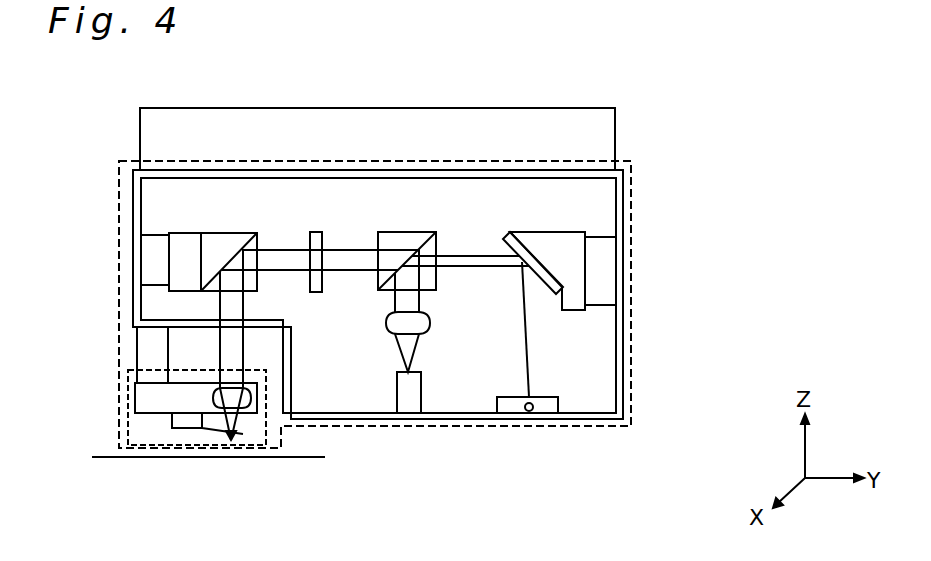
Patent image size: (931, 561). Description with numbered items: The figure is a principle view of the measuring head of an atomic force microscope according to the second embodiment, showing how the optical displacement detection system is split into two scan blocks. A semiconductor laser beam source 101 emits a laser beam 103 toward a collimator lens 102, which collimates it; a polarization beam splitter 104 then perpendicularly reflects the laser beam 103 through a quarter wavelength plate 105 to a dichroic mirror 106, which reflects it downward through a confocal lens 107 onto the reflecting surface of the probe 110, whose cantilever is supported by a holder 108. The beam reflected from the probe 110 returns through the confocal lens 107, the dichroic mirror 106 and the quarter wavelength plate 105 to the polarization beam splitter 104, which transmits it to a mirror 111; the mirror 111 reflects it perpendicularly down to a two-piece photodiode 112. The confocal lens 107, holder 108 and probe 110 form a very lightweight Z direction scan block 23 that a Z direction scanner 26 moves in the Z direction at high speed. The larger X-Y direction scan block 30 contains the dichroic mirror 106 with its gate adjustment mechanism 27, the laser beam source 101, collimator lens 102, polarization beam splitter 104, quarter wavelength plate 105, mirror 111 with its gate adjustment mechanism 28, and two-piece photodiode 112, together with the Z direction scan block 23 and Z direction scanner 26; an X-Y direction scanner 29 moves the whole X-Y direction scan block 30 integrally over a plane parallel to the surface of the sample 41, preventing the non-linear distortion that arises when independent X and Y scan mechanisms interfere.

The Z direction scan block 23 is at (128, 392).
The Z direction scanner 26 is at (137, 358).
The gate adjustment mechanism 27 is at (177, 232).
The gate adjustment mechanism 28 is at (586, 267).
The X-Y direction scanner 29 is at (412, 108).
The X-Y direction scan block 30 is at (632, 173).
The sample 41 is at (108, 456).
The semiconductor laser beam source 101 is at (421, 383).
The collimator lens 102 is at (431, 323).
The laser beam 103 is at (422, 302).
The polarization beam splitter 104 is at (392, 231).
The quarter wavelength plate 105 is at (316, 232).
The dichroic mirror 106 is at (227, 232).
The confocal lens 107 is at (248, 395).
The holder 108 is at (180, 430).
The probe 110 is at (221, 437).
The mirror 111 is at (503, 240).
The two-piece photodiode 112 is at (550, 397).